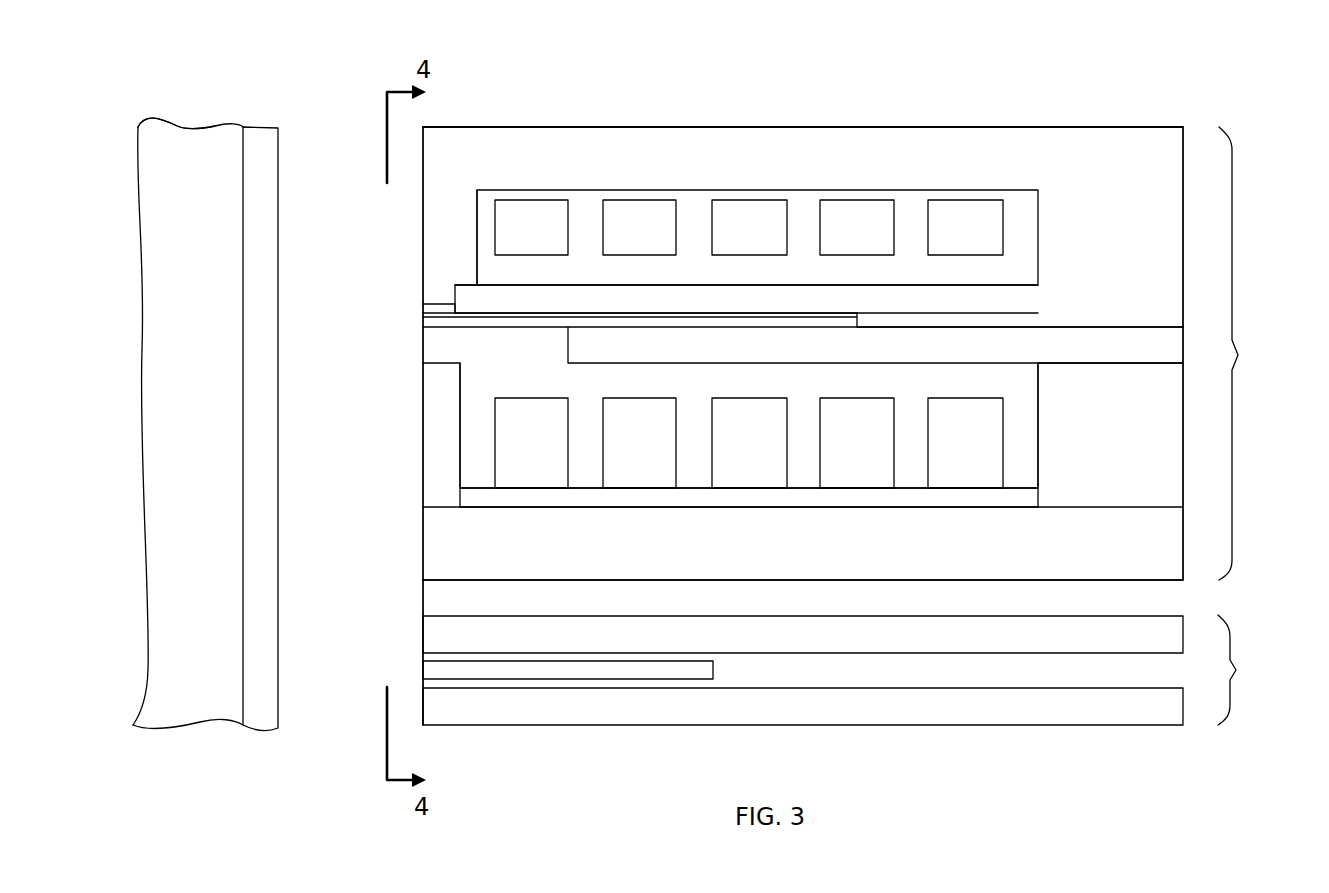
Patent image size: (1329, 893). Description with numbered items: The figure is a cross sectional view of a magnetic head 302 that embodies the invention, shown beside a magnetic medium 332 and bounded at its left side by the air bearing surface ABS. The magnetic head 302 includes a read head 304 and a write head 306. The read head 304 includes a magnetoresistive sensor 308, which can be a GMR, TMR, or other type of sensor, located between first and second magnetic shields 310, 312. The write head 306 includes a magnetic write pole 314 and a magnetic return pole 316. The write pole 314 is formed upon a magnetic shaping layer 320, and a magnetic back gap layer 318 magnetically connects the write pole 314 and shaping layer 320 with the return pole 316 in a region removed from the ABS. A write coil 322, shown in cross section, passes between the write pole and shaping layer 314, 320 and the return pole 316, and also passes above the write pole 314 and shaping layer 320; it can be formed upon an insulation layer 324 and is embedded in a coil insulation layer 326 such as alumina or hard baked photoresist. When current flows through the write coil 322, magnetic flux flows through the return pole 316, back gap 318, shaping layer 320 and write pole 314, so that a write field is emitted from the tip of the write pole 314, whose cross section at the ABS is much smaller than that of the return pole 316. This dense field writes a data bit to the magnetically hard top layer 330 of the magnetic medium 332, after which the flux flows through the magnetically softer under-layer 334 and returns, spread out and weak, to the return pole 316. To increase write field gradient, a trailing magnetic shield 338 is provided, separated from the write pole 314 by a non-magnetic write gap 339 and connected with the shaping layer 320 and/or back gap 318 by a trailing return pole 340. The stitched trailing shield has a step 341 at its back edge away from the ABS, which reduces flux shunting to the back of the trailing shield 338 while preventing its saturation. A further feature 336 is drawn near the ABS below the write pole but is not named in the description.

The magnetic head 302 is at (955, 82).
The read head 304 is at (1236, 633).
The write head 306 is at (1232, 151).
The magnetoresistive sensor 308 is at (713, 665).
The first magnetic shield 310 is at (803, 706).
The second magnetic shield 312 is at (803, 634).
The magnetic write pole 314 is at (433, 317).
The magnetic return pole 316 is at (803, 543).
The magnetic back gap layer 318 is at (1110, 435).
The magnetic shaping layer 320 is at (803, 345).
The write coil 322 is at (749, 344).
The insulation layer 324 is at (921, 312).
The coil insulation layer 326 is at (690, 211).
The magnetically hard top layer 330 is at (268, 146).
The magnetic medium 332 is at (190, 112).
The magnetically softer under-layer 334 is at (188, 423).
The leading edge taper 336 is at (432, 405).
The trailing magnetic shield 338 is at (460, 273).
The non-magnetic write gap 339 is at (437, 304).
The trailing return pole 340 is at (803, 149).
The step 341 is at (458, 287).
The air bearing surface ABS is at (423, 343).